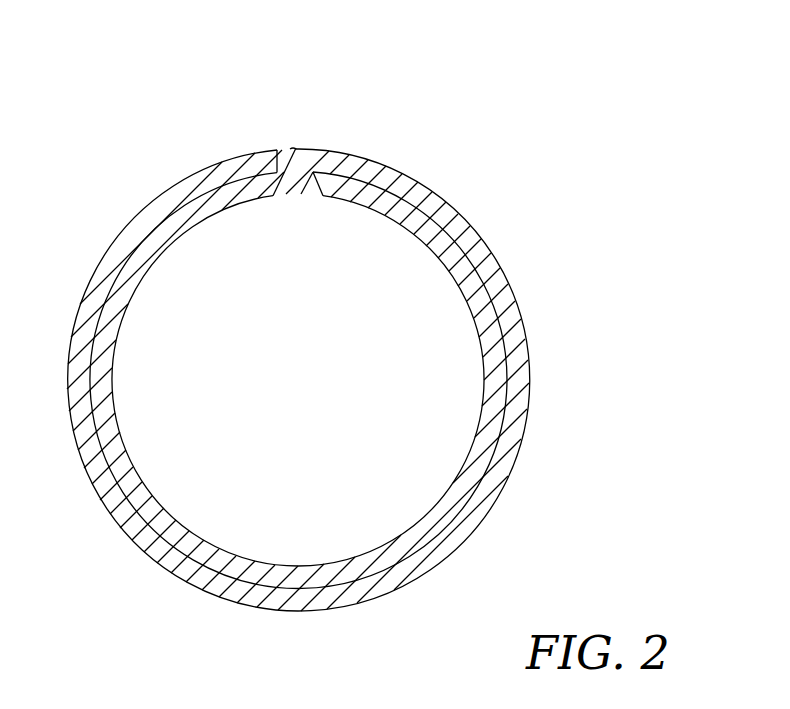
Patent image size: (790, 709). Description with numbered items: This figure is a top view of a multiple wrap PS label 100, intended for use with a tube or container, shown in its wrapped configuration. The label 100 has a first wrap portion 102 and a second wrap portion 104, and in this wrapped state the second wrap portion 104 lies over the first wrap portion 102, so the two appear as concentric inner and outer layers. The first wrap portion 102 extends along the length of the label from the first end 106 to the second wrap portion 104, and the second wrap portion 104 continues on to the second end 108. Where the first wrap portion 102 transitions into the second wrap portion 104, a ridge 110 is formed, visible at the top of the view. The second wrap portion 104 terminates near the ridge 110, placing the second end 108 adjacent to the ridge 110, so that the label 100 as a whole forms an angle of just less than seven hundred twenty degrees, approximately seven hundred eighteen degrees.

The multiple wrap PS label 100 is at (172, 84).
The first wrap portion 102 is at (491, 353).
The second wrap portion 104 is at (374, 158).
The first end 106 is at (301, 194).
The second end 108 is at (247, 149).
The ridge 110 is at (293, 147).